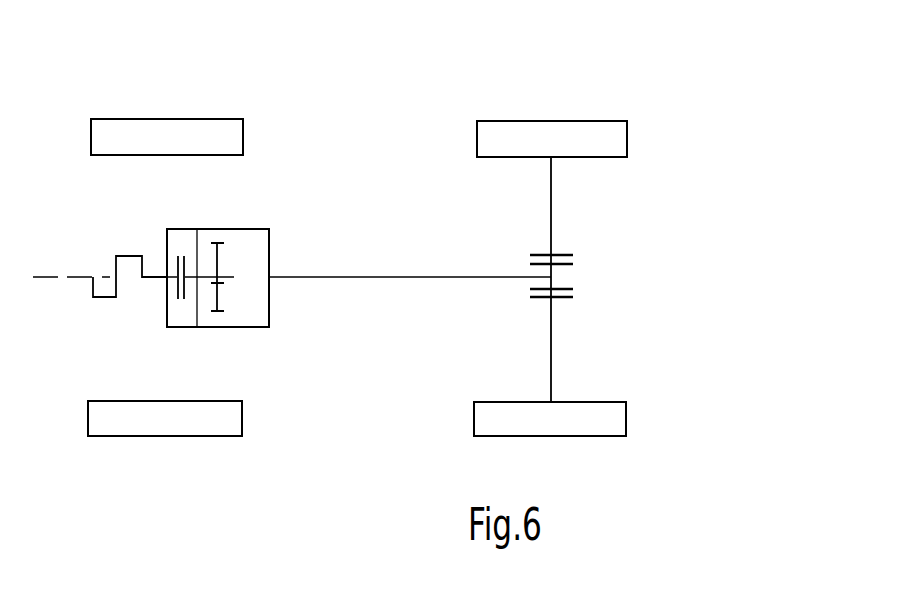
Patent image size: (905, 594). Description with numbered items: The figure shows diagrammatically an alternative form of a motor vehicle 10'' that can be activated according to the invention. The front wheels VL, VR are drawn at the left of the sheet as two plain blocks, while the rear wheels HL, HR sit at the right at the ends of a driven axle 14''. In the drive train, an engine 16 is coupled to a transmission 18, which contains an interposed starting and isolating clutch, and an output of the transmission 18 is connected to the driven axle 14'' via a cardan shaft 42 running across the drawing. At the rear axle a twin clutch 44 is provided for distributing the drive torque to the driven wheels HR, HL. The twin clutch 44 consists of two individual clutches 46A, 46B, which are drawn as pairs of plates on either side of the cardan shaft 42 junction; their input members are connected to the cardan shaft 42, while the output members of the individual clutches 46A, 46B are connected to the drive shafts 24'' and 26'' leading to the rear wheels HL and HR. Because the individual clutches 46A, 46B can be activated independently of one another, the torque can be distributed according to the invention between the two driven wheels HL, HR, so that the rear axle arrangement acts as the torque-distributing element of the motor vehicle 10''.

The motor vehicle 10'' is at (704, 97).
The driven axle 14'' is at (703, 429).
The engine 16 is at (103, 303).
The transmission 18 is at (254, 249).
The drive shaft 24'' is at (597, 349).
The drive shaft 26'' is at (504, 206).
The cardan shaft 42 is at (378, 277).
The twin clutch 44 is at (619, 253).
The individual clutch 46A is at (557, 253).
The individual clutch 46B is at (560, 298).
The front right wheel VR is at (228, 140).
The front left wheel VL is at (150, 422).
The rear right wheel HR is at (613, 135).
The rear left wheel HL is at (568, 423).